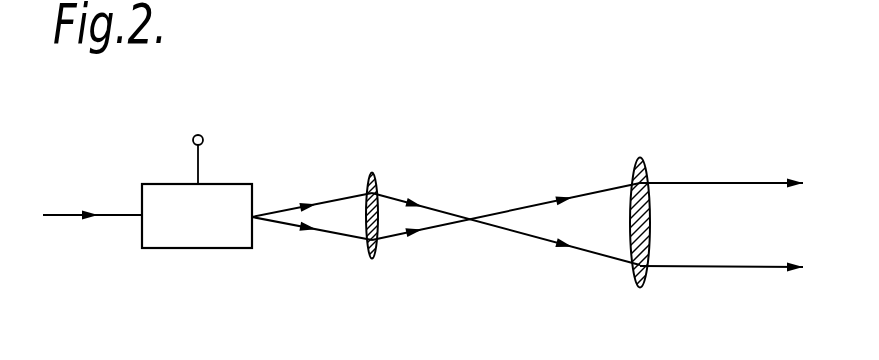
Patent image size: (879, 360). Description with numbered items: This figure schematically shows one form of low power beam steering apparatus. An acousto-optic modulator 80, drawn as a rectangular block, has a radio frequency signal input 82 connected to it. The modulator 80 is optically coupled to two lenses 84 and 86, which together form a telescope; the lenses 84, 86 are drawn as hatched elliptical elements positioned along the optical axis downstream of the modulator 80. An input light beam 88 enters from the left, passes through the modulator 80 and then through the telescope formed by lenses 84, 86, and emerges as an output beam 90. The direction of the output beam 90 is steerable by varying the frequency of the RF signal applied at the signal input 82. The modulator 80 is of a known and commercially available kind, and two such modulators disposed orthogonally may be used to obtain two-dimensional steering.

The acousto-optic modulator 80 is at (212, 250).
The radio frequency signal input 82 is at (193, 141).
The lens 84 is at (374, 181).
The lens 86 is at (646, 170).
The input light beam 88 is at (70, 216).
The output beam 90 is at (827, 242).